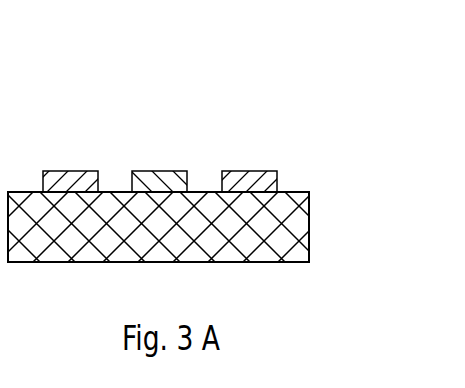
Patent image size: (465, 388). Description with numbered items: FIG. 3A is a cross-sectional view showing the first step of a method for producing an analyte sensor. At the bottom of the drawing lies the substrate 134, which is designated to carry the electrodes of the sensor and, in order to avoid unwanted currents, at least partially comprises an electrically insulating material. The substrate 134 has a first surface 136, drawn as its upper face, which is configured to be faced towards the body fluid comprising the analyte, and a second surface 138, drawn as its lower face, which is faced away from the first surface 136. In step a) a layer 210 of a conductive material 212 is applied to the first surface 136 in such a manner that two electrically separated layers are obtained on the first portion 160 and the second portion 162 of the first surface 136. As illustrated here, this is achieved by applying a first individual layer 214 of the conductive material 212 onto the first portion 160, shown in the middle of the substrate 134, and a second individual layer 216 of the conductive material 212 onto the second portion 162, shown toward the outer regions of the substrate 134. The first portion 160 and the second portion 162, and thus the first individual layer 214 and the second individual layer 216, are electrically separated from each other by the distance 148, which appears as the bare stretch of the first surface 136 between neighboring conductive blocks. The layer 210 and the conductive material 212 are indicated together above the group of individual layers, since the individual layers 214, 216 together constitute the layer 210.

The substrate 134 is at (327, 222).
The first surface 136 is at (293, 191).
The second surface 138 is at (293, 263).
The distance 148 is at (117, 188).
The first portion 160 is at (163, 207).
The second portion 162 is at (70, 207).
The layer 210 is at (162, 98).
The conductive material 212 is at (277, 105).
The first individual layer 214 is at (158, 178).
The second individual layer 216 is at (72, 176).